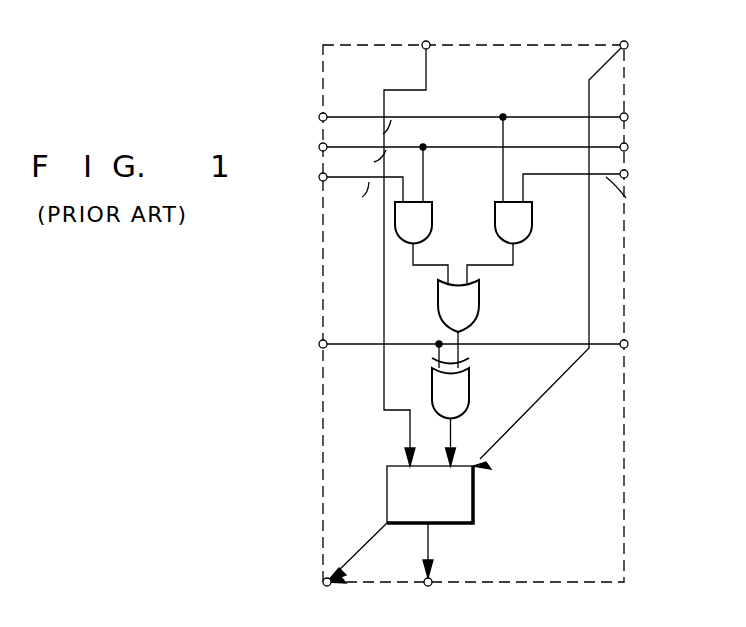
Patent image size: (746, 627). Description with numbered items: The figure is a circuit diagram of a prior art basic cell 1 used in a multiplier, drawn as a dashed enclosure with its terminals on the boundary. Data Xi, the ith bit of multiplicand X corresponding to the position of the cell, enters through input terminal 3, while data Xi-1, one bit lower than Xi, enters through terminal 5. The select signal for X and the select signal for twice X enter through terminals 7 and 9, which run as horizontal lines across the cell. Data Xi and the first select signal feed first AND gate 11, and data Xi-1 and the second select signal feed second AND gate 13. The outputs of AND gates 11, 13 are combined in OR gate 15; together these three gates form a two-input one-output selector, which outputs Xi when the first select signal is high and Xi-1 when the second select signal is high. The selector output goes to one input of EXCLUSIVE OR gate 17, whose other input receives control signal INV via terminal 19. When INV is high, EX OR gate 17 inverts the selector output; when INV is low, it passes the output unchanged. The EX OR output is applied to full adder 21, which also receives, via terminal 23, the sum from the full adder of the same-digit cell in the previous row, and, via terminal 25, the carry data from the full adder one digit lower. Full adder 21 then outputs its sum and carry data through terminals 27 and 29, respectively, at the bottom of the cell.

The basic cell 1 is at (626, 397).
The input terminal 3 is at (319, 177).
The terminal 5 is at (628, 175).
The terminal 7 is at (319, 147).
The terminal 9 is at (319, 117).
The first AND gate 11 is at (433, 215).
The second AND gate 13 is at (533, 215).
The OR gate 15 is at (480, 300).
The EXCLUSIVE OR gate 17 is at (470, 372).
The terminal 19 is at (319, 344).
The full adder 21 is at (475, 485).
The terminal 23 is at (426, 41).
The terminal 25 is at (626, 50).
The terminal 27 is at (430, 586).
The terminal 29 is at (329, 586).